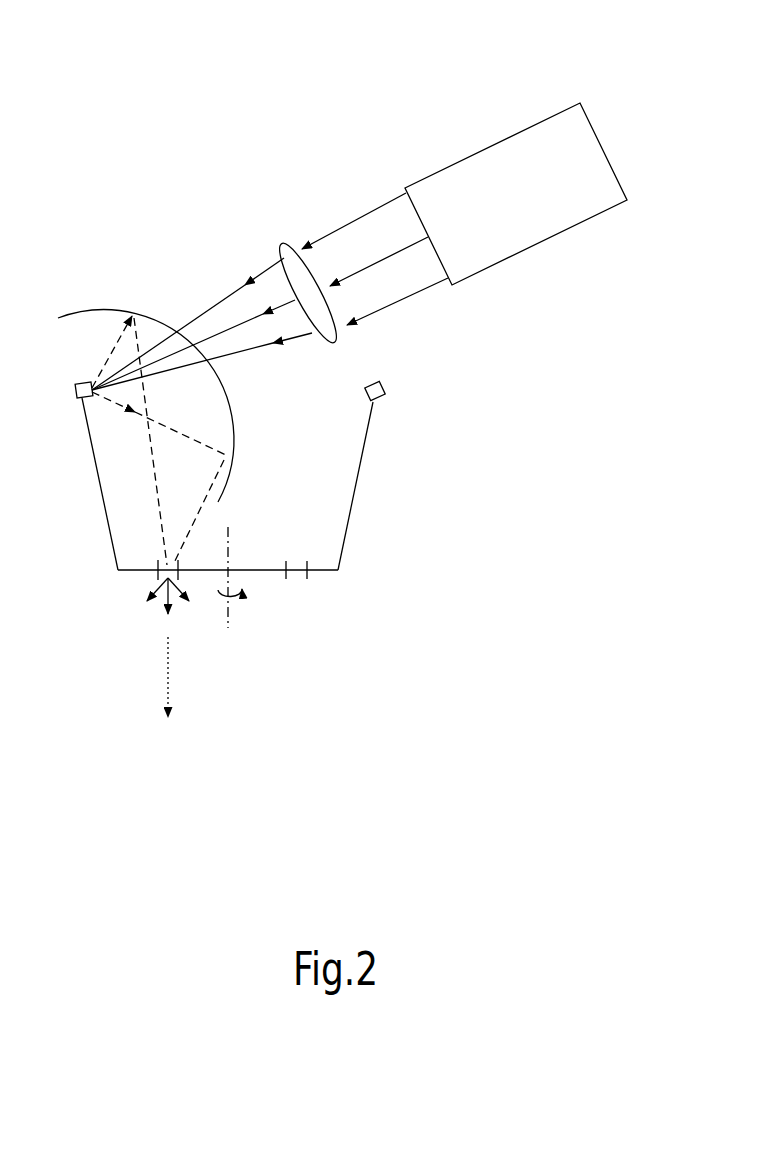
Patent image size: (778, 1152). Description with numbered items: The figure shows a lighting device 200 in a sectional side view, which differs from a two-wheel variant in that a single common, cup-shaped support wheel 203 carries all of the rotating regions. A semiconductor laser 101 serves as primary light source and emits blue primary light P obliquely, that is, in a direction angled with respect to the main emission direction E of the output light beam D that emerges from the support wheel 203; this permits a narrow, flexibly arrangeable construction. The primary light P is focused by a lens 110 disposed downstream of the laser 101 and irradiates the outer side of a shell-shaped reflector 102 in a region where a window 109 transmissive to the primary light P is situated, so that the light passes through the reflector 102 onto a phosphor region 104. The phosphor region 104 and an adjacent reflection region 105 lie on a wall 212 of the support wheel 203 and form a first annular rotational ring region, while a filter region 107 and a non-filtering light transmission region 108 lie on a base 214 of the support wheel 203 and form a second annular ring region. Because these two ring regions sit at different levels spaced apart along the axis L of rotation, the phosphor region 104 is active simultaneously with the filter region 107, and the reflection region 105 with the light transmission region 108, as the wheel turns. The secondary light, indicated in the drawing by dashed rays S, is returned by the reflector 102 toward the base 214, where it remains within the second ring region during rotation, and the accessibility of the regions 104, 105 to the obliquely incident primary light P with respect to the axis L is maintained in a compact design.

The lighting device 200 is at (232, 102).
The semiconductor laser 101 is at (523, 158).
The lens 110 is at (286, 250).
The shell-shaped reflector 102 is at (146, 361).
The window 109 is at (163, 325).
The phosphor region 104 is at (76, 394).
The reflection region 105 is at (385, 389).
The wall 212 is at (372, 432).
The common support wheel 203 is at (264, 515).
The light transmission region 108 is at (305, 562).
The filter region 107 is at (162, 560).
The base 214 is at (332, 570).
The primary light P is at (360, 222).
The scanning beams S is at (145, 413).
The axis of rotation L is at (230, 608).
The main emission direction E is at (170, 668).
The output light beam D is at (190, 603).